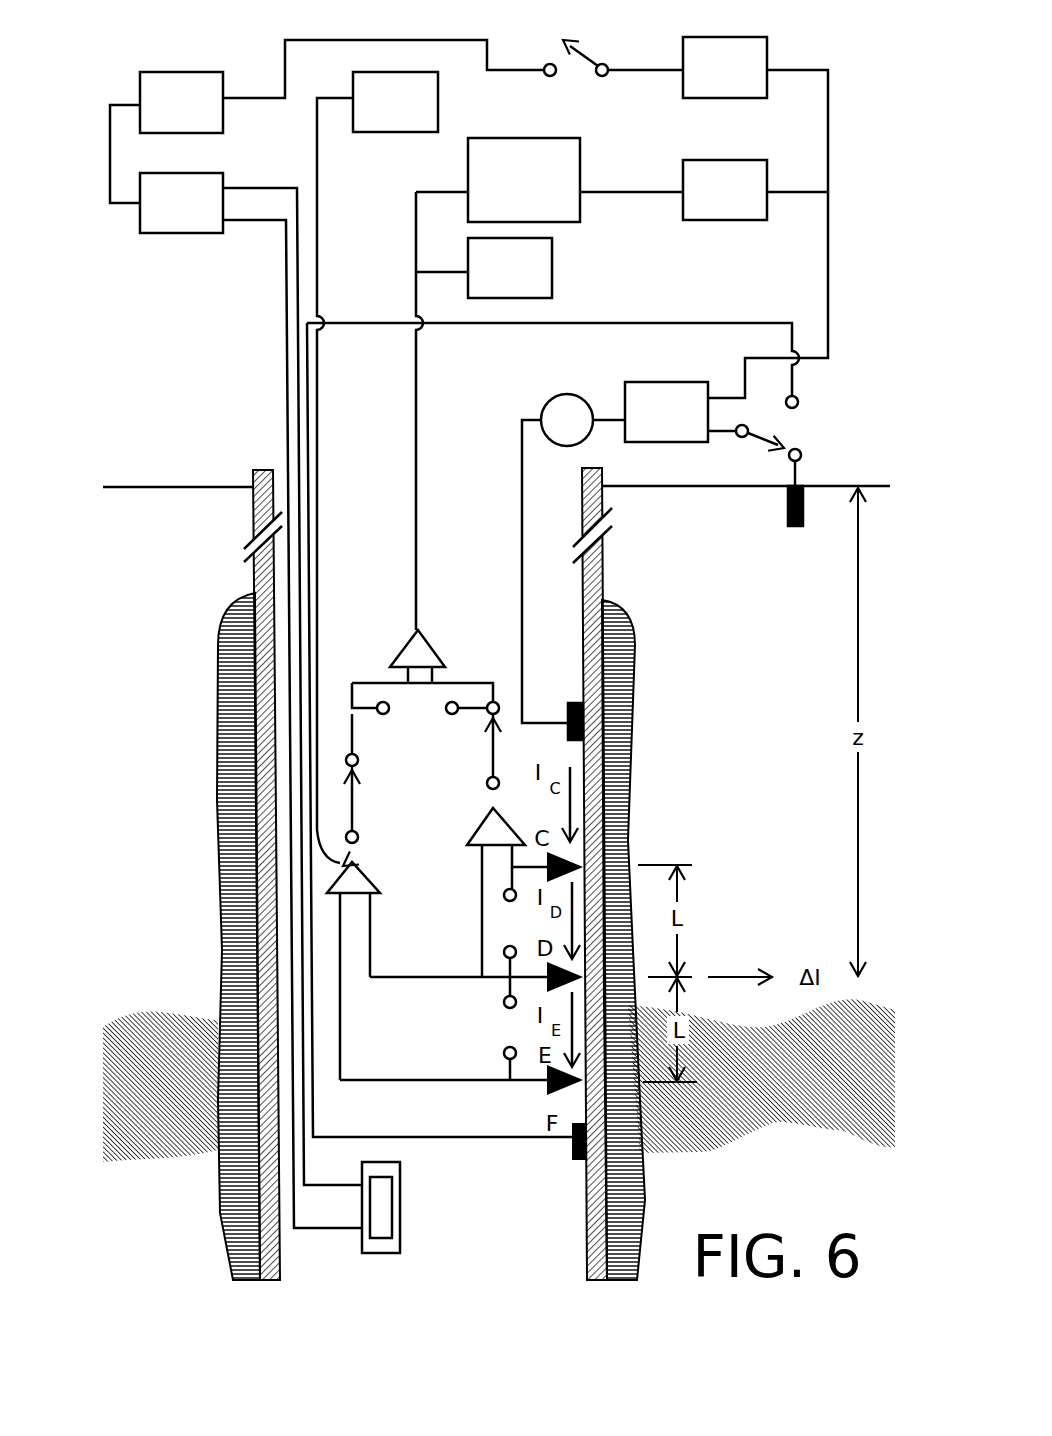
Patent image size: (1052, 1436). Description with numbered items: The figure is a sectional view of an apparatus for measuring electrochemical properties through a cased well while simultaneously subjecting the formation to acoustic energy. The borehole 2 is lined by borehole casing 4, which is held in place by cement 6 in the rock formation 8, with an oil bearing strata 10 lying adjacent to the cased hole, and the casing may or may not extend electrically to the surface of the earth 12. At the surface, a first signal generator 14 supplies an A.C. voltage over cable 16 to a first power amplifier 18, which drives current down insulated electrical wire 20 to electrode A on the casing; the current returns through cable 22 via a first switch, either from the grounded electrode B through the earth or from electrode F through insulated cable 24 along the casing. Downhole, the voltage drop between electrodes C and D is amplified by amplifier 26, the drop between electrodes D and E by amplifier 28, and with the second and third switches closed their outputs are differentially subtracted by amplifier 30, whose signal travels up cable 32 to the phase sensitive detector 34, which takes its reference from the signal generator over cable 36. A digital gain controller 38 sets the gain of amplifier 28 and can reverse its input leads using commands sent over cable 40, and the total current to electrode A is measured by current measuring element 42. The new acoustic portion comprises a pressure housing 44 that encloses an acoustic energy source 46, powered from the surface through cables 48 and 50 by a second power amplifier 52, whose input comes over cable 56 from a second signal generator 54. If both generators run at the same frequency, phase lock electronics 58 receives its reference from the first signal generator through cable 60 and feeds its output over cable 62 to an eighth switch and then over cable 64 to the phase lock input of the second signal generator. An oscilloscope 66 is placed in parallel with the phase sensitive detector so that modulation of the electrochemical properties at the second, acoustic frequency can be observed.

The borehole 2 is at (560, 1175).
The borehole casing 4 is at (590, 1200).
The cement 6 is at (625, 1185).
The rock formation 8 is at (775, 1158).
The oil bearing strata 10 is at (850, 1102).
The surface of the earth 12 is at (635, 488).
The signal generator SG1 14 is at (737, 160).
The cable 16 is at (828, 320).
The power amplifier PA1 18 is at (625, 402).
The insulated electrical wire 20 is at (522, 447).
The cable 22 is at (725, 438).
The insulated cable 24 is at (680, 320).
The amplifier 26 is at (477, 825).
The amplifier 28 is at (370, 876).
The amplifier 30 is at (435, 652).
The cable 32 is at (417, 517).
The phase sensitive detector 34 is at (525, 138).
The cable 36 is at (605, 192).
The digital gain controller 38 is at (412, 132).
The cable 40 is at (317, 407).
The current measuring element 42 is at (543, 410).
The pressure housing 44 is at (402, 1242).
The acoustic energy source 46 is at (383, 1212).
The cable 48 is at (284, 320).
The cable 50 is at (288, 288).
The second power amplifier PA2 52 is at (173, 233).
The second signal generator SG2 54 is at (197, 72).
The cable 56 is at (112, 147).
The phase lock electronics 58 is at (740, 98).
The cable 60 is at (828, 126).
The cable 62 is at (636, 65).
The cable 64 is at (233, 100).
The oscilloscope 66 is at (552, 272).